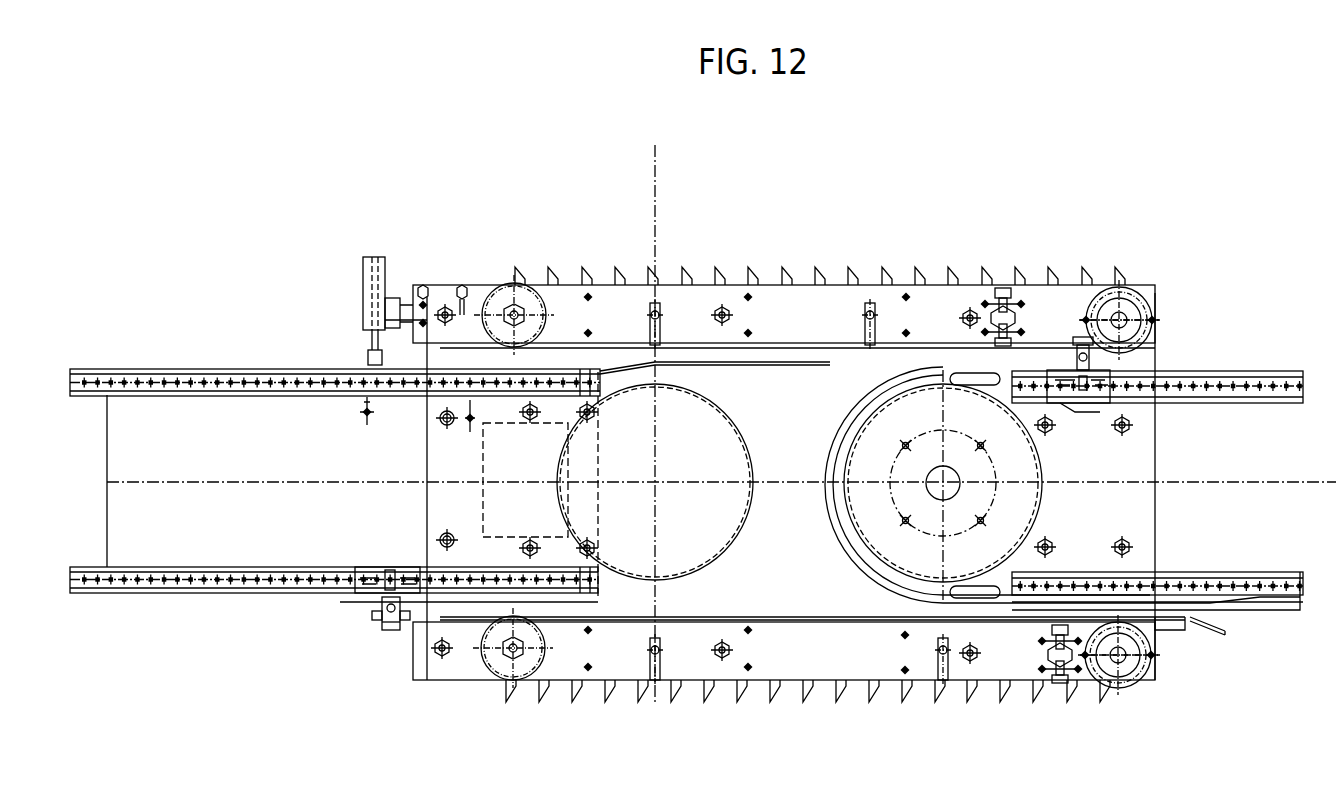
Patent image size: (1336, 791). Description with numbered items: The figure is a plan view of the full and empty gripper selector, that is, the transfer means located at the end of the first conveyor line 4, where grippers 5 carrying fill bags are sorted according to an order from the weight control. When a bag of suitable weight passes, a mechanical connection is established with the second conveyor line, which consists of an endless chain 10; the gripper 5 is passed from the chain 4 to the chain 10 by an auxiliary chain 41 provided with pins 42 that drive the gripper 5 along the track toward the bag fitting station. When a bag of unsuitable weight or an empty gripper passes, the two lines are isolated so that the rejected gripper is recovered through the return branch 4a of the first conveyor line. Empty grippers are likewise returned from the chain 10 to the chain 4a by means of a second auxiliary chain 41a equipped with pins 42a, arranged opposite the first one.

The first conveyor line 4 is at (172, 383).
The return branch of the first conveyor line 4a is at (252, 578).
The gripper 5 is at (372, 623).
The endless chain of the second conveyor line 10 is at (1198, 392).
The auxiliary chain 41 is at (635, 280).
The auxiliary chain 41a is at (915, 700).
The pins 42 is at (720, 270).
The pins 42a is at (702, 697).